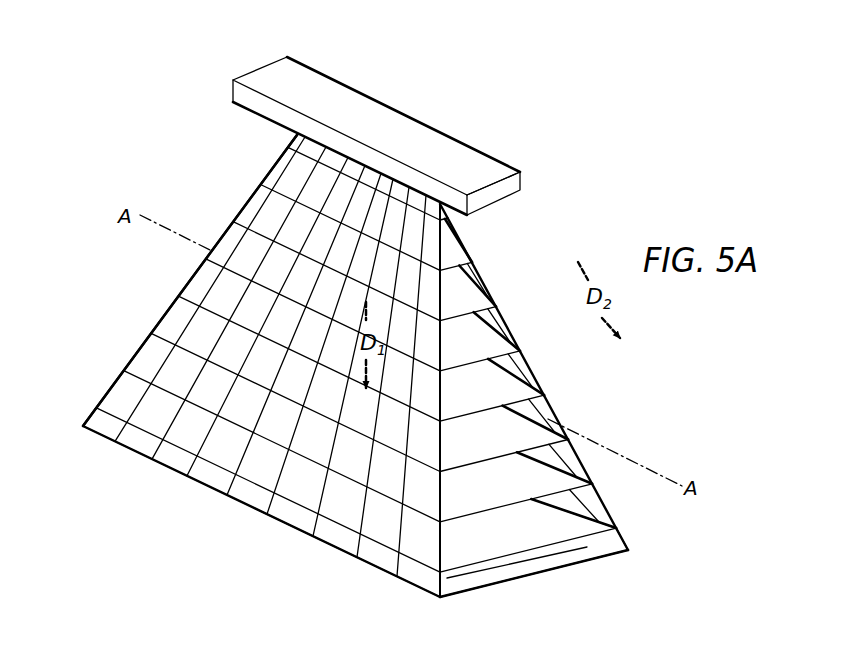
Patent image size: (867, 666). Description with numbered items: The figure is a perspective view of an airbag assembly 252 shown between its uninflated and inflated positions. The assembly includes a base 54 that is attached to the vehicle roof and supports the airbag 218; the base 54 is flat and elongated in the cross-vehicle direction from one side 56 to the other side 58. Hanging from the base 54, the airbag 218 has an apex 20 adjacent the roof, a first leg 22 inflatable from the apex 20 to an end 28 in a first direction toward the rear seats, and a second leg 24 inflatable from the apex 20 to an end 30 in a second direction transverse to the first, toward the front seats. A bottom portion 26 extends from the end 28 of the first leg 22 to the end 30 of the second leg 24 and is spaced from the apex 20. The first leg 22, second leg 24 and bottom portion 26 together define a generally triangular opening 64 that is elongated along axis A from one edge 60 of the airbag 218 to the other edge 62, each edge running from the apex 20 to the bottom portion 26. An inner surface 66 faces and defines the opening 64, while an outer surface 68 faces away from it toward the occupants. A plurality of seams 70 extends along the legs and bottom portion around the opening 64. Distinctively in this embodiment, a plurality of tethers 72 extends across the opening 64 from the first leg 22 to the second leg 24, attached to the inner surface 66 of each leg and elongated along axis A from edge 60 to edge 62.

The apex 20 is at (440, 205).
The first leg 22 is at (170, 316).
The second leg 24 is at (612, 533).
The bottom portion 26 is at (508, 585).
The end 28 is at (438, 604).
The end 30 is at (640, 555).
The base 54 is at (440, 128).
The side 56 is at (505, 186).
The side 58 is at (262, 76).
The edge 60 is at (474, 598).
The edge 62 is at (128, 358).
The opening 64 is at (492, 492).
The inner surface 66 is at (476, 308).
The outer surface 68 is at (236, 196).
The plurality of seams 70 is at (233, 470).
The plurality of tethers 72 is at (472, 256).
The airbag 218 is at (472, 233).
The airbag assembly 252 is at (216, 146).